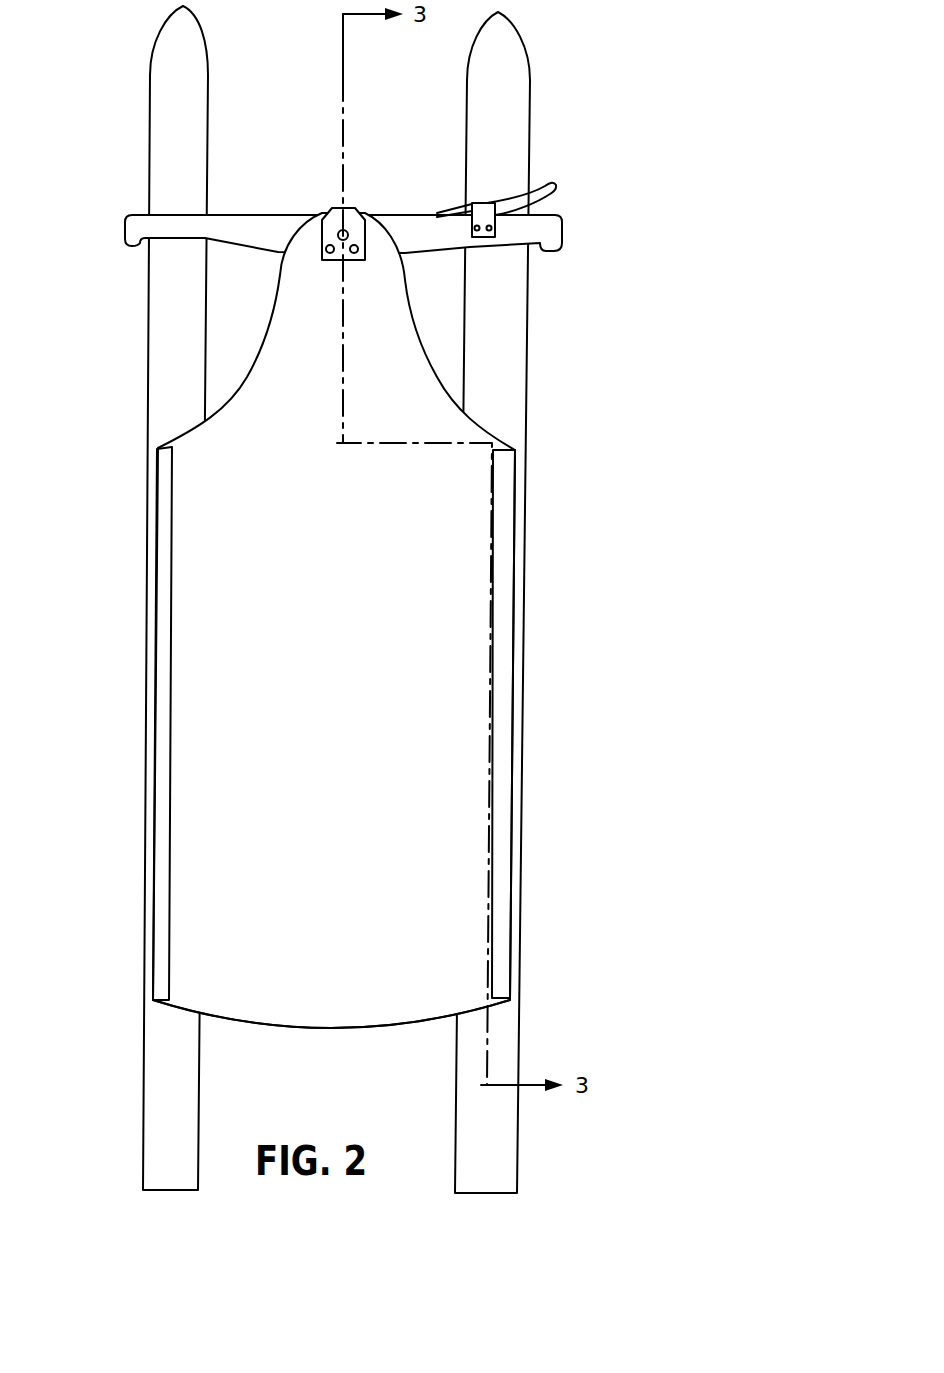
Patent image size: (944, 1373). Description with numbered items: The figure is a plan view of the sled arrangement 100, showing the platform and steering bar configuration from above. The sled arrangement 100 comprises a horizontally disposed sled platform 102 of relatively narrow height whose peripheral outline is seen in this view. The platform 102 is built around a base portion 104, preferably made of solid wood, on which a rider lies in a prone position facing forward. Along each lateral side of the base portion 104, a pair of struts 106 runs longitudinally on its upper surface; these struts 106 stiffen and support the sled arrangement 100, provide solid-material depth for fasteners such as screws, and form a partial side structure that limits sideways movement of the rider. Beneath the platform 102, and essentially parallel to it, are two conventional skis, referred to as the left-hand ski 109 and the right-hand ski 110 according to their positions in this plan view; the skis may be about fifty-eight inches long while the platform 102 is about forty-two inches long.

The sled arrangement 100 is at (128, 628).
The sled platform 102 is at (128, 917).
The base portion 104 is at (330, 1028).
The struts 106 is at (155, 802).
The left-hand ski 109 is at (142, 1132).
The right-hand ski 110 is at (518, 1158).